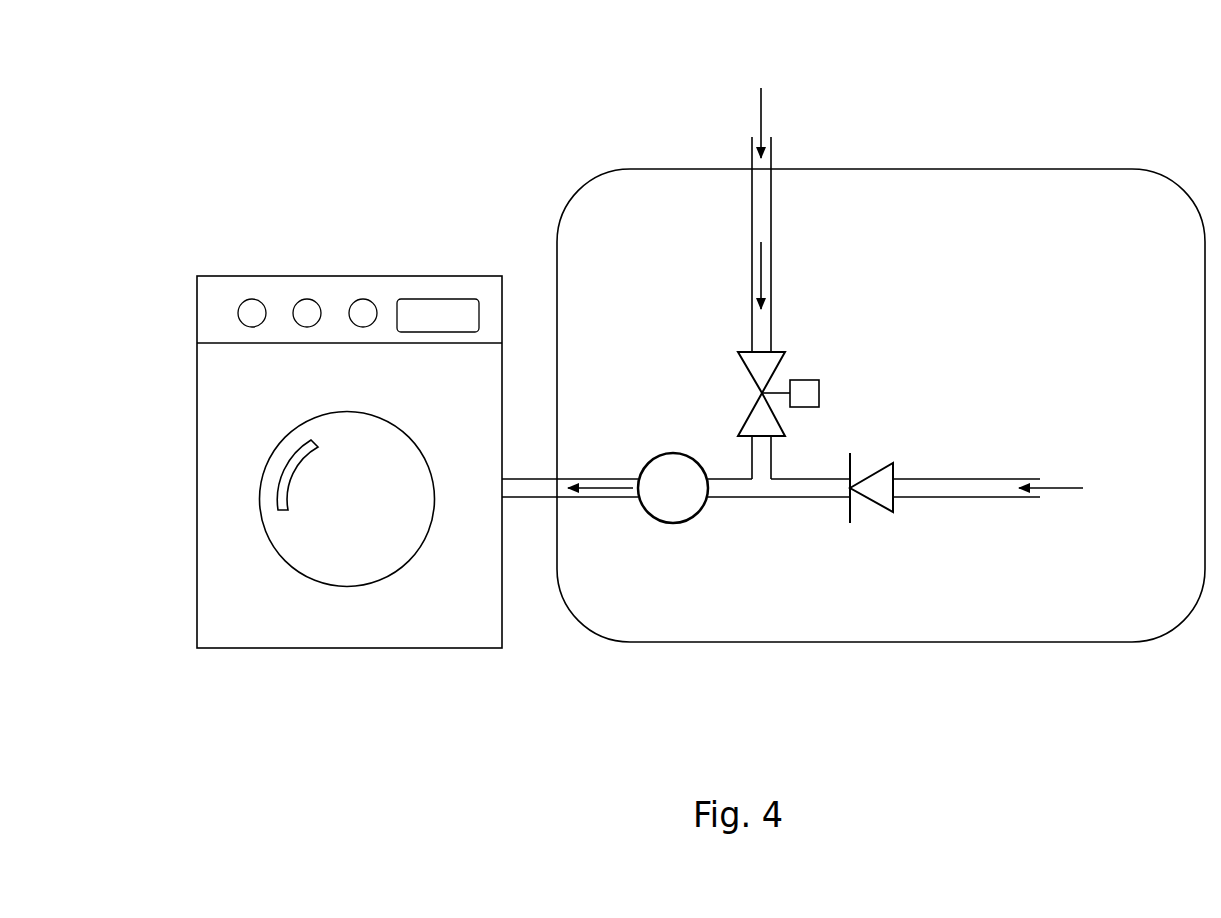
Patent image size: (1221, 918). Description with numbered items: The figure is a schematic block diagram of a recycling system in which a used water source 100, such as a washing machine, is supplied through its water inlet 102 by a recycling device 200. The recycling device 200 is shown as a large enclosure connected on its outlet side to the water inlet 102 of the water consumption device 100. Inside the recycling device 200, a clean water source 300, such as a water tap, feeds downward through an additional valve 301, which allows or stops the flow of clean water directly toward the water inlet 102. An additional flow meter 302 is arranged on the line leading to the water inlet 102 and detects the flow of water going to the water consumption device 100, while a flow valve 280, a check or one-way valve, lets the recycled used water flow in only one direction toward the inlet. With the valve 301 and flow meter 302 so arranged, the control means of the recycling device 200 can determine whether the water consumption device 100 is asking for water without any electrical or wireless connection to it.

The used water source 100 is at (257, 617).
The water inlet 102 is at (517, 478).
The recycling device 200 is at (658, 222).
The flow valve 280 is at (890, 512).
The clean water source 300 is at (762, 205).
The additional valve 301 is at (820, 392).
The additional flow meter 302 is at (672, 524).